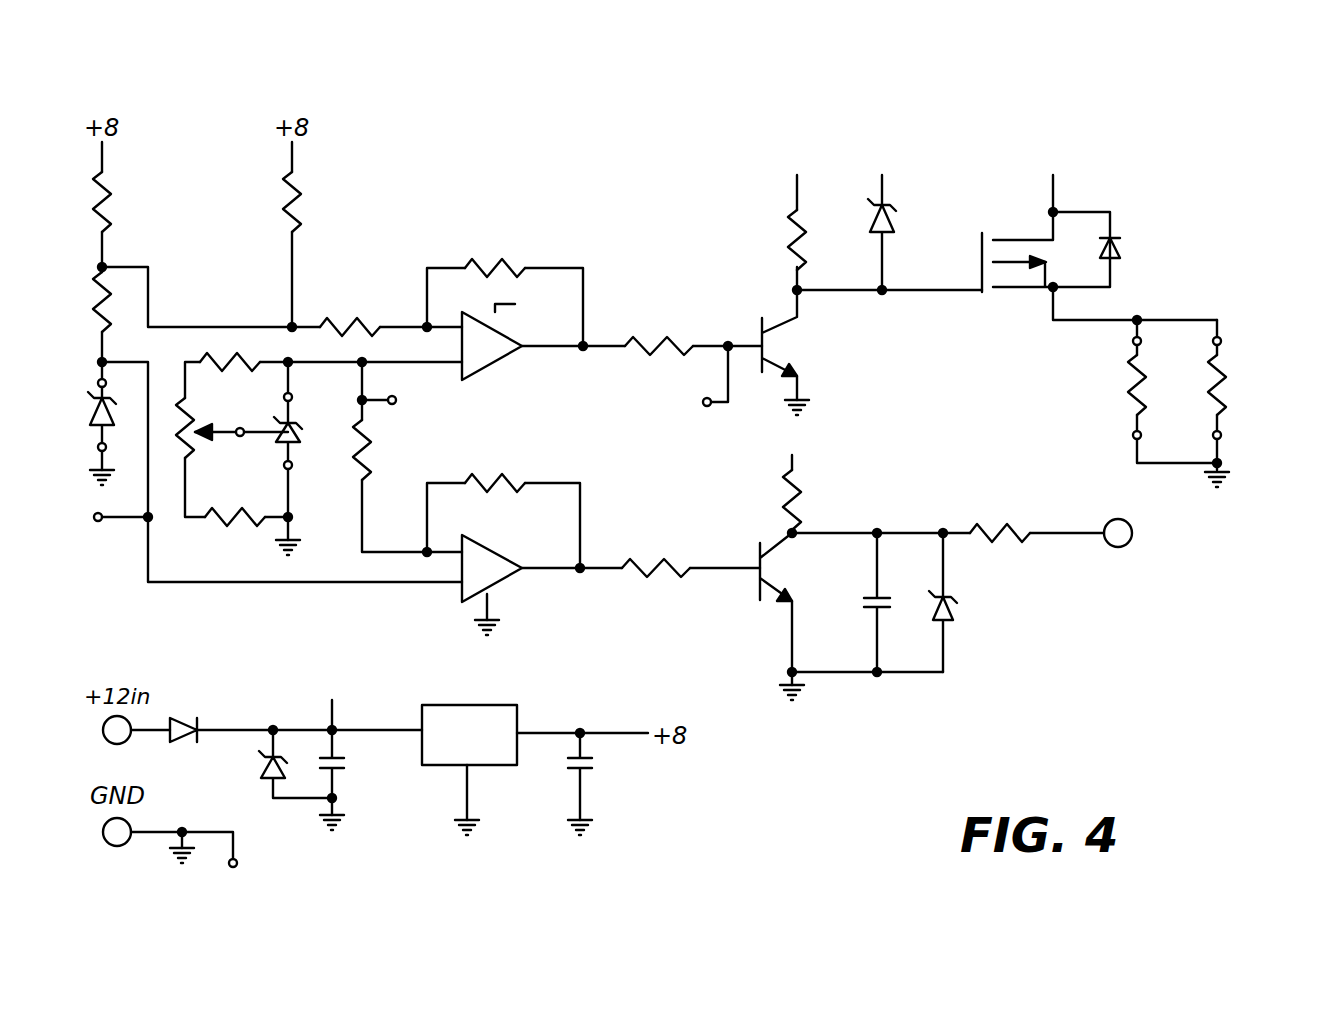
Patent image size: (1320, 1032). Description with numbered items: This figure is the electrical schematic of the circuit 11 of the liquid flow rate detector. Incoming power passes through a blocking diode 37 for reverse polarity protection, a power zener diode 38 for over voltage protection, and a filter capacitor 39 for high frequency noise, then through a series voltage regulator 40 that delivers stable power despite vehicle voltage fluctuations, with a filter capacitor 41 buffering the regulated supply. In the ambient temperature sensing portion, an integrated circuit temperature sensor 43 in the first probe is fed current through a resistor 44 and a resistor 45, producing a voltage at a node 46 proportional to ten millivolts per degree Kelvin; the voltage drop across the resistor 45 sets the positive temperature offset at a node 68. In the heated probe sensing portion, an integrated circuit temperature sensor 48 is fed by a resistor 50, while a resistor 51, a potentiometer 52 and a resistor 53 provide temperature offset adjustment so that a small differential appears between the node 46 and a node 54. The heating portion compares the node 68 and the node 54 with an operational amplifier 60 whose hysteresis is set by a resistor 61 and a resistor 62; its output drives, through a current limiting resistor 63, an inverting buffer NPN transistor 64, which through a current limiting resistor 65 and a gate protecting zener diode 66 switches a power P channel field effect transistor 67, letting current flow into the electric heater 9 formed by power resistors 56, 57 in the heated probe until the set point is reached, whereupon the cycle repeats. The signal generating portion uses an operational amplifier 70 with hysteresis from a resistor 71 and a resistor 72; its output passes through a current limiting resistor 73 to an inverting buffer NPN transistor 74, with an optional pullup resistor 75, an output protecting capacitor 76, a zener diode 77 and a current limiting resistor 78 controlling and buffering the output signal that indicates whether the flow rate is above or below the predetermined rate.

The electric heater 9 is at (1103, 398).
The electrical circuit 11 is at (468, 208).
The blocking diode 37 is at (178, 709).
The power zener diode 38 is at (262, 776).
The filter capacitor 39 is at (346, 774).
The series voltage regulator 40 is at (500, 704).
The filter capacitor 41 is at (589, 776).
The integrated circuit temperature sensor 43 is at (90, 424).
The resistor 44 is at (110, 203).
The resistor 45 is at (92, 311).
The node 46 is at (99, 362).
The integrated circuit temperature sensor 48 is at (297, 440).
The resistor 50 is at (302, 186).
The resistor 51 is at (215, 368).
The potentiometer 52 is at (200, 455).
The resistor 53 is at (246, 526).
The node 54 is at (362, 364).
The power resistor 56 is at (1142, 392).
The power resistor 57 is at (1228, 379).
The operational amplifier 60 is at (490, 378).
The resistor 61 is at (352, 320).
The resistor 62 is at (500, 262).
The current limiting resistor 63 is at (668, 335).
The inverting buffer NPN transistor 64 is at (770, 380).
The current limiting resistor 65 is at (786, 228).
The gate protecting zener diode 66 is at (896, 222).
The power P channel field effect transistor 67 is at (1008, 288).
The node 68 is at (105, 265).
The operational amplifier 70 is at (496, 548).
The resistor 71 is at (372, 452).
The resistor 72 is at (498, 478).
The current limiting resistor 73 is at (662, 556).
The inverting buffer NPN transistor 74 is at (775, 600).
The pullup resistor 75 is at (802, 506).
The output protecting capacitor 76 is at (866, 594).
The zener diode 77 is at (960, 614).
The current limiting resistor 78 is at (1013, 518).